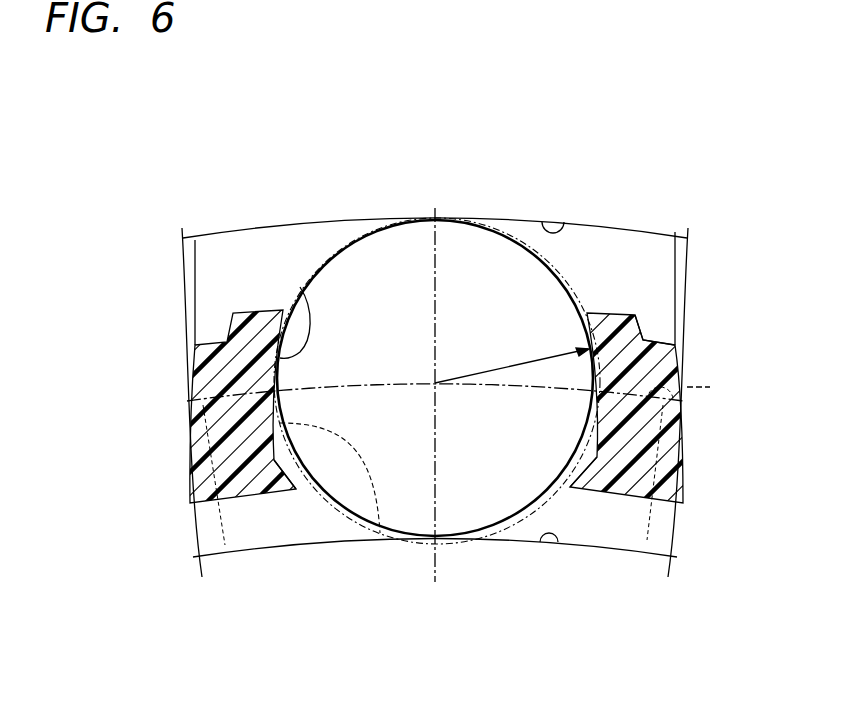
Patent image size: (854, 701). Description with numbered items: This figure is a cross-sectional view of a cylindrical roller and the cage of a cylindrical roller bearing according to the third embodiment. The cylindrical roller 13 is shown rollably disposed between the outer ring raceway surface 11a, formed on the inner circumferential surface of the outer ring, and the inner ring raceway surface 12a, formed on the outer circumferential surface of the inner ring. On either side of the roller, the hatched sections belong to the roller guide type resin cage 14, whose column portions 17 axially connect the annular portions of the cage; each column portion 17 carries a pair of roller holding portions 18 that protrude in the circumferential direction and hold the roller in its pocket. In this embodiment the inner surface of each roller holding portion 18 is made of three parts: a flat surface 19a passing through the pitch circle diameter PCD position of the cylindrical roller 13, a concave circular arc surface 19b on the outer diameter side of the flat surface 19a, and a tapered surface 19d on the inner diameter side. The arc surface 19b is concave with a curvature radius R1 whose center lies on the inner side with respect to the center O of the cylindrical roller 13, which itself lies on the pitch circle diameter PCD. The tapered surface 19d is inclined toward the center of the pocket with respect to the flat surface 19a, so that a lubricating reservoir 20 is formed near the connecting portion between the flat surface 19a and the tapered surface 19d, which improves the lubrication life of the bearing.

The outer ring raceway surface 11a is at (563, 220).
The inner ring raceway surface 12a is at (538, 543).
The cylindrical roller 13 is at (347, 247).
The resin cage 14 is at (654, 337).
The column portion 17 is at (268, 476).
The roller holding portion 18 is at (270, 325).
The flat surface 19a is at (380, 533).
The concave circular arc surface 19b is at (300, 287).
The tapered surface 19d is at (300, 469).
The lubricating reservoir 20 is at (585, 492).
The center of the cylindrical roller O is at (437, 383).
The curvature radius R1 is at (512, 364).
The pitch circle diameter PCD is at (467, 389).